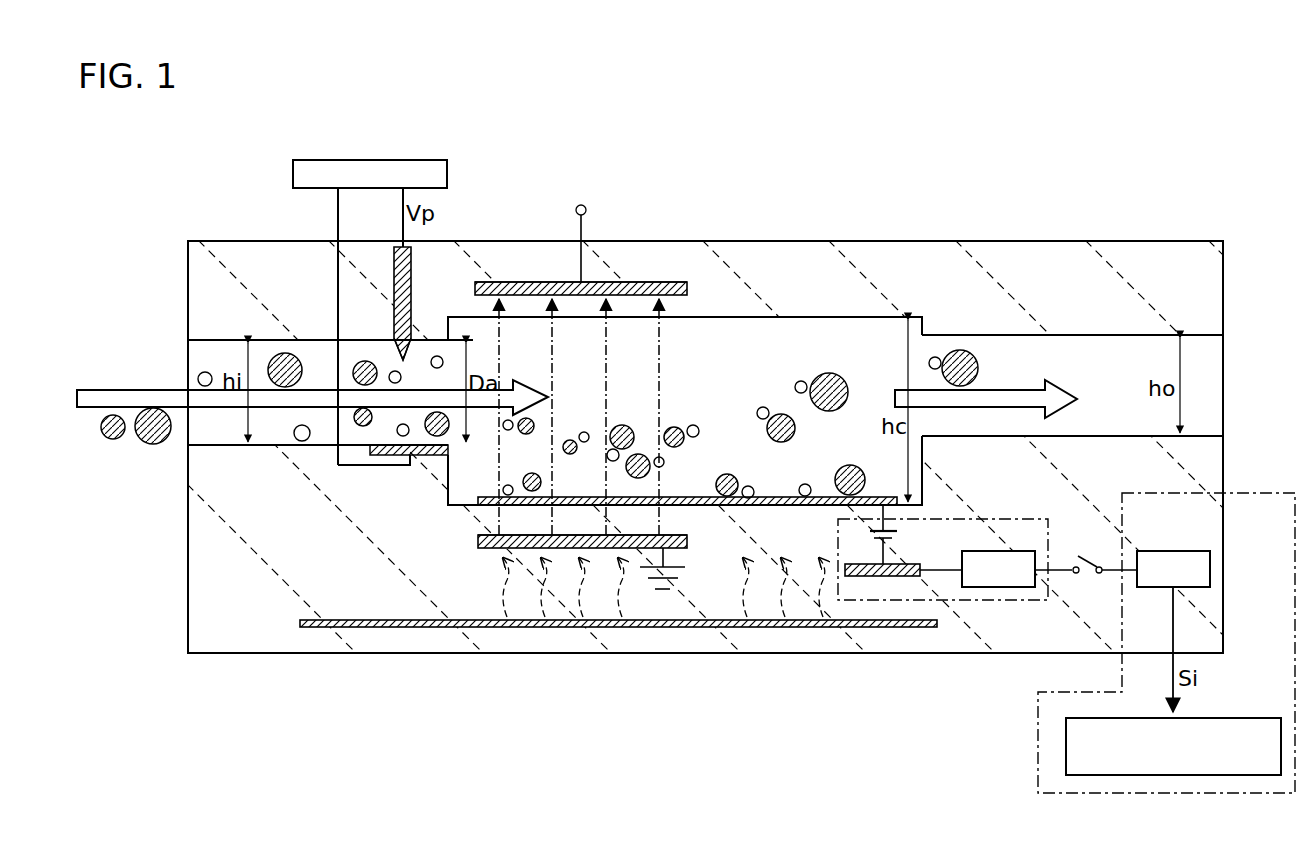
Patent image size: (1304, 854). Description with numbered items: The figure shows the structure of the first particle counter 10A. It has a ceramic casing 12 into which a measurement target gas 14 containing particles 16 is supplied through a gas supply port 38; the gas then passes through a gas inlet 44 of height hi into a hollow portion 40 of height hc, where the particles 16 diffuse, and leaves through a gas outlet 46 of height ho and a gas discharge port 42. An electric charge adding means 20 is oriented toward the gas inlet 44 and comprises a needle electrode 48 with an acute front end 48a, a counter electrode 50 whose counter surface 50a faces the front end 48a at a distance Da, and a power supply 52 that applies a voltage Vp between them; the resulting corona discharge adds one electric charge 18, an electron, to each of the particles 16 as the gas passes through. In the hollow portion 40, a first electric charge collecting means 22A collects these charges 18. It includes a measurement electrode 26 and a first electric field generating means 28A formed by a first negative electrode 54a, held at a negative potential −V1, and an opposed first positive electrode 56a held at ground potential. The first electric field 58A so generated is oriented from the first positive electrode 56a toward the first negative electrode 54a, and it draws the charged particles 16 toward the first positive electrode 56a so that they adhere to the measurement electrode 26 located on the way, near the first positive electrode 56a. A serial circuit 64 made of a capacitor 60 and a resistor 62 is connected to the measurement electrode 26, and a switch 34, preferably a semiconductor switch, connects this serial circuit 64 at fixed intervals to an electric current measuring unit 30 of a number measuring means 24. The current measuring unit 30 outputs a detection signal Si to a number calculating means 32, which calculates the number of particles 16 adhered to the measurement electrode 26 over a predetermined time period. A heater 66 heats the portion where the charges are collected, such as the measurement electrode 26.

The first particle counter 10A is at (186, 153).
The casing 12 is at (226, 241).
The measurement target gas 14 is at (110, 390).
The particles 16 is at (276, 350).
The electric charges 18 is at (437, 354).
The electric charge adding means 20 is at (409, 283).
The first electric charge collecting means 22A is at (603, 562).
The number measuring means 24 is at (1120, 680).
The measurement electrode 26 is at (768, 497).
The first electric field generating means 28A is at (652, 278).
The electric current measuring unit 30 is at (1170, 551).
The number calculating means 32 is at (1216, 718).
The switch 34 is at (1098, 560).
The gas supply port 38 is at (210, 432).
The hollow portion 40 is at (823, 330).
The gas discharge port 42 is at (1224, 388).
The gas inlet 44 is at (315, 348).
The gas outlet 46 is at (1098, 348).
The needle electrode 48 is at (395, 282).
The front end 48a is at (400, 362).
The counter electrode 50 is at (420, 455).
The counter surface 50a is at (380, 438).
The power supply 52 is at (380, 160).
The first negative electrode 54a is at (567, 283).
The first positive electrode 56a is at (478, 541).
The first electric field 58A is at (666, 356).
The capacitor 60 is at (898, 535).
The resistor 62 is at (980, 578).
The serial circuit 64 is at (955, 553).
The heater 66 is at (560, 628).